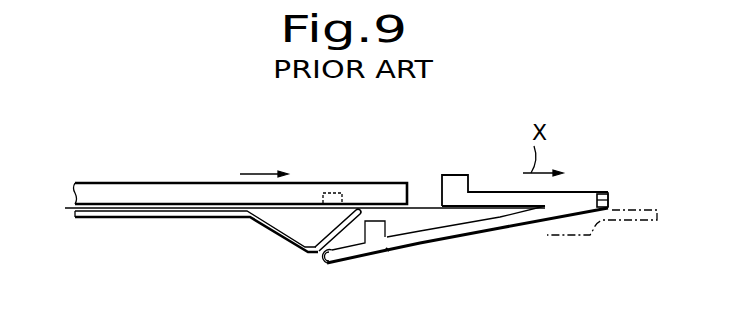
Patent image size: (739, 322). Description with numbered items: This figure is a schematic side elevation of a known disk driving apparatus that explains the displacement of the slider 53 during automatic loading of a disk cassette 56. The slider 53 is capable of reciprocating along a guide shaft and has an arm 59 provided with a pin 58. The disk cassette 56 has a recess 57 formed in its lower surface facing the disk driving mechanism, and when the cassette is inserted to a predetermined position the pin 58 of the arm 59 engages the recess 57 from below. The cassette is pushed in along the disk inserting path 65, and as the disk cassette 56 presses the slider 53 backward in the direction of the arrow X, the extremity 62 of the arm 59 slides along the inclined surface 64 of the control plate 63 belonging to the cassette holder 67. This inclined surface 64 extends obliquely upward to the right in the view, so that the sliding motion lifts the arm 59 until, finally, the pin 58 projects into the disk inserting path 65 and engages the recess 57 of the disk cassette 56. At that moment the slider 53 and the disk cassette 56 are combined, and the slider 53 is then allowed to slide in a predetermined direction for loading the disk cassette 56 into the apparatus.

The slider 53 is at (486, 191).
The disk cassette 56 is at (147, 192).
The recess 57 is at (326, 193).
The pin 58 is at (587, 192).
The arm 59 is at (475, 231).
The extremity of the arm 62 is at (548, 233).
The control plate 63 is at (314, 253).
The inclined surface 64 is at (365, 253).
The disk inserting path 65 is at (418, 207).
The cassette holder 67 is at (125, 218).